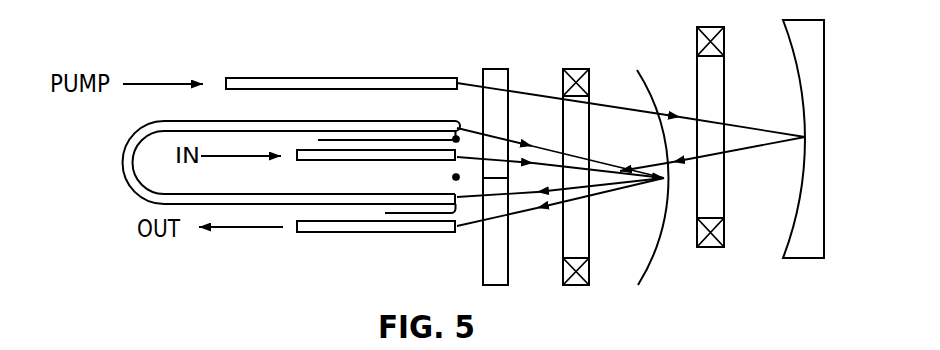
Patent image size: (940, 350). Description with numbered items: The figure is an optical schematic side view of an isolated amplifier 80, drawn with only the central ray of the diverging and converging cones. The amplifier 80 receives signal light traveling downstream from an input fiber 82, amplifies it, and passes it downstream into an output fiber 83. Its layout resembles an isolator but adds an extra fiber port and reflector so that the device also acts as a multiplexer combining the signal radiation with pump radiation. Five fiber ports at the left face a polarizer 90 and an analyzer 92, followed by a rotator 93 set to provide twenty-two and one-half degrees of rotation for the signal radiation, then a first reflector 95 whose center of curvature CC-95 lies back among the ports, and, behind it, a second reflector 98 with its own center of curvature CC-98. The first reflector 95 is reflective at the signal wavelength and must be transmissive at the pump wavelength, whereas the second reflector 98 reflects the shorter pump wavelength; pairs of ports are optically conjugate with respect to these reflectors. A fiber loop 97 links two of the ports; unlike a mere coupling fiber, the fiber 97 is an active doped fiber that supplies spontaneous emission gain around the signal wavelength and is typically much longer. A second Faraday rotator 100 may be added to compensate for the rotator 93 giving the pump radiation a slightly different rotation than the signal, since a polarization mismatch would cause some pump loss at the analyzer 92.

The amplifier 80 is at (297, 282).
The input fiber 82 is at (326, 161).
The output fiber 83 is at (315, 233).
The polarizer 90 is at (510, 82).
The analyzer 92 is at (511, 248).
The 22.5° rotator 93 is at (591, 122).
The first reflector 95 is at (656, 250).
The fiber loop 97 is at (122, 170).
The second reflector 98 is at (792, 222).
The second Faraday rotator 100 is at (725, 72).
The center of curvature of second reflector CC-98 is at (460, 139).
The center of curvature of first reflector CC-95 is at (453, 178).